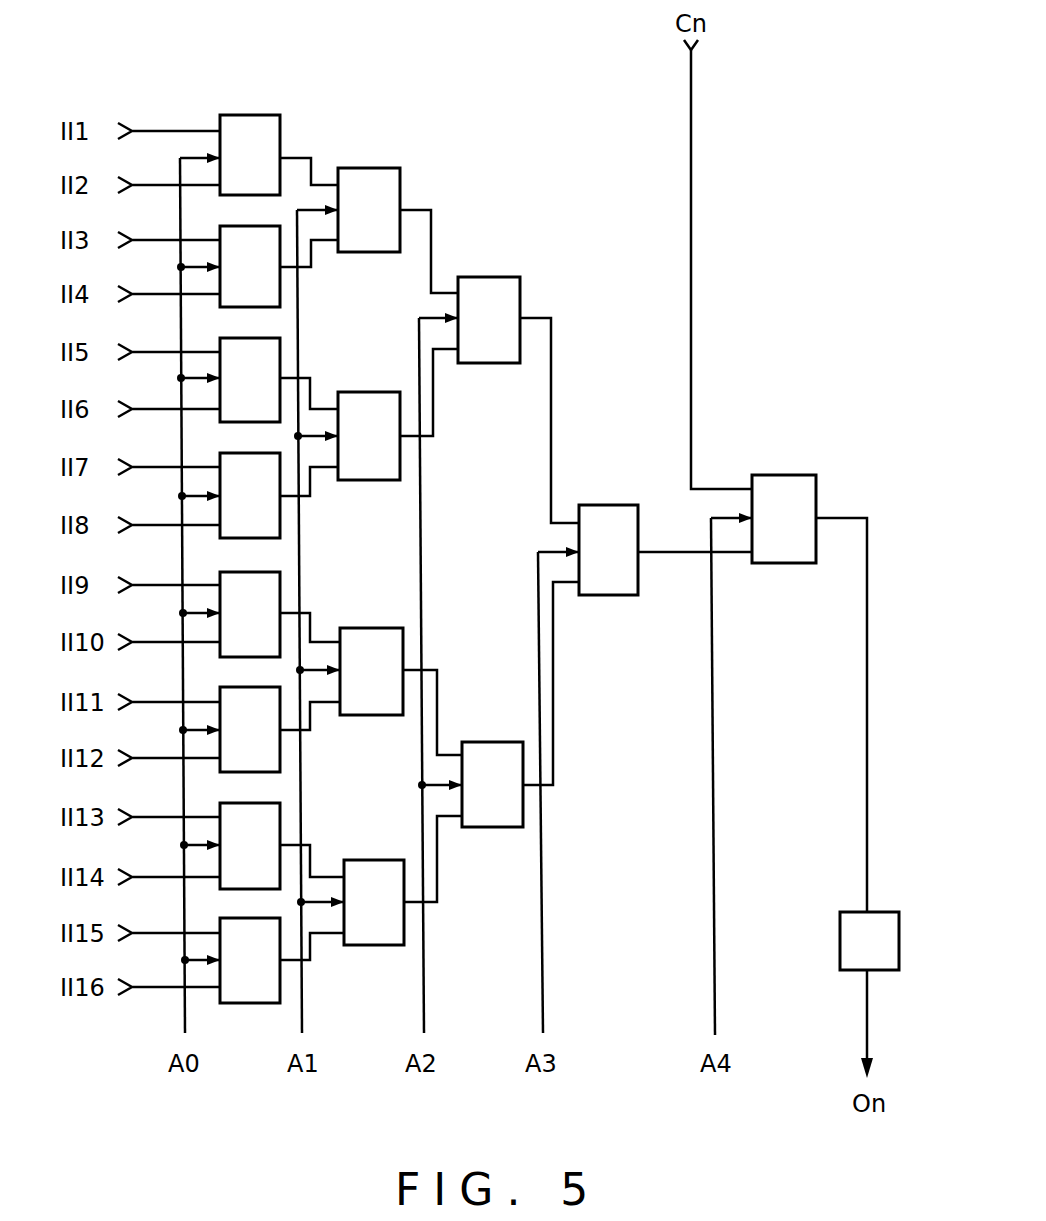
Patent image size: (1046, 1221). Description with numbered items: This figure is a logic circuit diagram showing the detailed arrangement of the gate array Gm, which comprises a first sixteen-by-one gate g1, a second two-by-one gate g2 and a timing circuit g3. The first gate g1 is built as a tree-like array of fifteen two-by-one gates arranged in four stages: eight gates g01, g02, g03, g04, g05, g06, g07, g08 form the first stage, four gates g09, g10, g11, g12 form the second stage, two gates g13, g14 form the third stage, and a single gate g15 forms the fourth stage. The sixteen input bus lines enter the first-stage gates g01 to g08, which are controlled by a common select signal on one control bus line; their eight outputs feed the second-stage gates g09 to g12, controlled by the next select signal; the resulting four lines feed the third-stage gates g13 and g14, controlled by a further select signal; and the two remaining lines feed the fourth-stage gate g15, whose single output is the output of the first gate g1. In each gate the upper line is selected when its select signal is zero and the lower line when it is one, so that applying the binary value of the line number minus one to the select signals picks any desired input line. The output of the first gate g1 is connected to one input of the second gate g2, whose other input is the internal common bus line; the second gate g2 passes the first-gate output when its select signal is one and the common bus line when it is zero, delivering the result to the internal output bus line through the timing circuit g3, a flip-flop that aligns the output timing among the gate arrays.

The 2×1 gate g01 is at (240, 115).
The 2×1 gate g02 is at (244, 226).
The 2×1 gate g03 is at (244, 338).
The 2×1 gate g04 is at (244, 453).
The 2×1 gate g05 is at (244, 572).
The 2×1 gate g06 is at (244, 687).
The 2×1 gate g07 is at (244, 803).
The 2×1 gate g08 is at (228, 1003).
The 2×1 gate g09 is at (375, 168).
The 2×1 gate g10 is at (372, 392).
The 2×1 gate g11 is at (370, 628).
The 2×1 gate g12 is at (374, 860).
The 2×1 gate g13 is at (492, 277).
The 2×1 gate g14 is at (490, 742).
The 2×1 gate g15 is at (604, 505).
The first 16×1 gate g1 is at (470, 145).
The second 2×1 gate g2 is at (782, 475).
The timing circuit g3 is at (840, 942).
The gate array Gm is at (753, 225).